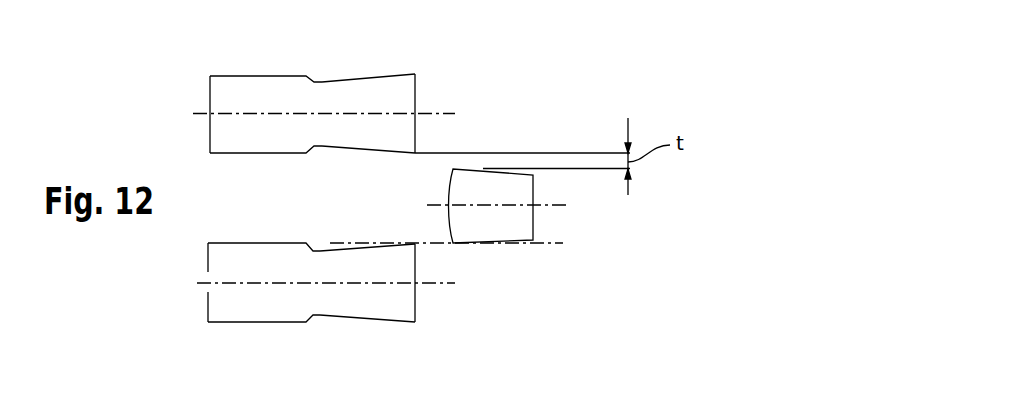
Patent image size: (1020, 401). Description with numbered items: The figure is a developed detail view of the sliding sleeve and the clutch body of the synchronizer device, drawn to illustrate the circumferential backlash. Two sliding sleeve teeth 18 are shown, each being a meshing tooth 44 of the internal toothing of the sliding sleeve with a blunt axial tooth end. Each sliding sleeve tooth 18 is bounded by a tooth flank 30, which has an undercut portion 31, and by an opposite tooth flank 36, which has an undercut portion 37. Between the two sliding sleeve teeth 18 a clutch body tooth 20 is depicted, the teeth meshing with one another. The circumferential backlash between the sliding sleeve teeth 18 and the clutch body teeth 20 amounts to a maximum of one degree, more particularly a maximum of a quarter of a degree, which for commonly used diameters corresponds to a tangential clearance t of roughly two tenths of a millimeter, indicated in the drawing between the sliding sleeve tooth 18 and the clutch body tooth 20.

The sliding sleeve tooth 18 is at (373, 203).
The clutch body tooth 20 is at (515, 223).
The tooth flank 30 is at (275, 75).
The undercut portion 31 is at (336, 78).
The opposite tooth flank 36 is at (268, 153).
The undercut portion 37 is at (337, 149).
The meshing tooth 44 is at (238, 93).